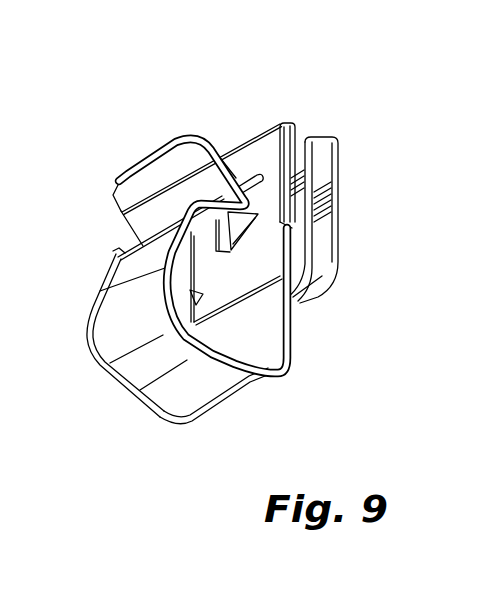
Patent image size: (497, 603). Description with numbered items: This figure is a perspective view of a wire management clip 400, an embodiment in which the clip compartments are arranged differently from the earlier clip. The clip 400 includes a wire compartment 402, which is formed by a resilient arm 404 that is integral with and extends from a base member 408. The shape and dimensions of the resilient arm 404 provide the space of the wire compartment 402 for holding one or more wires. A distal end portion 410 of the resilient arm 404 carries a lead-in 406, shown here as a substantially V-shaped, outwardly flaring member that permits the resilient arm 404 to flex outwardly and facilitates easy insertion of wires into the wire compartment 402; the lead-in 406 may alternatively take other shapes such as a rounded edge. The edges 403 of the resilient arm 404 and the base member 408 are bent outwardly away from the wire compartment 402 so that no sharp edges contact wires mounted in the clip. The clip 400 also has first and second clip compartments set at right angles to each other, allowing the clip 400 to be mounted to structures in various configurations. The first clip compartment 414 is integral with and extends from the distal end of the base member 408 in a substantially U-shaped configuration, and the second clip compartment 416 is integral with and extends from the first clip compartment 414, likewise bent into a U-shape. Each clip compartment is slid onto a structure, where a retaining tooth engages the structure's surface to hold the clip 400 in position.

The clip 400 is at (207, 97).
The wire compartment 402 is at (248, 323).
The edges 403 is at (183, 428).
The resilient arm 404 is at (117, 290).
The lead-in 406 is at (152, 172).
The base member 408 is at (236, 343).
The distal end portion 410 is at (114, 252).
The first clip compartment 414 is at (305, 138).
The second clip compartment 416 is at (316, 255).